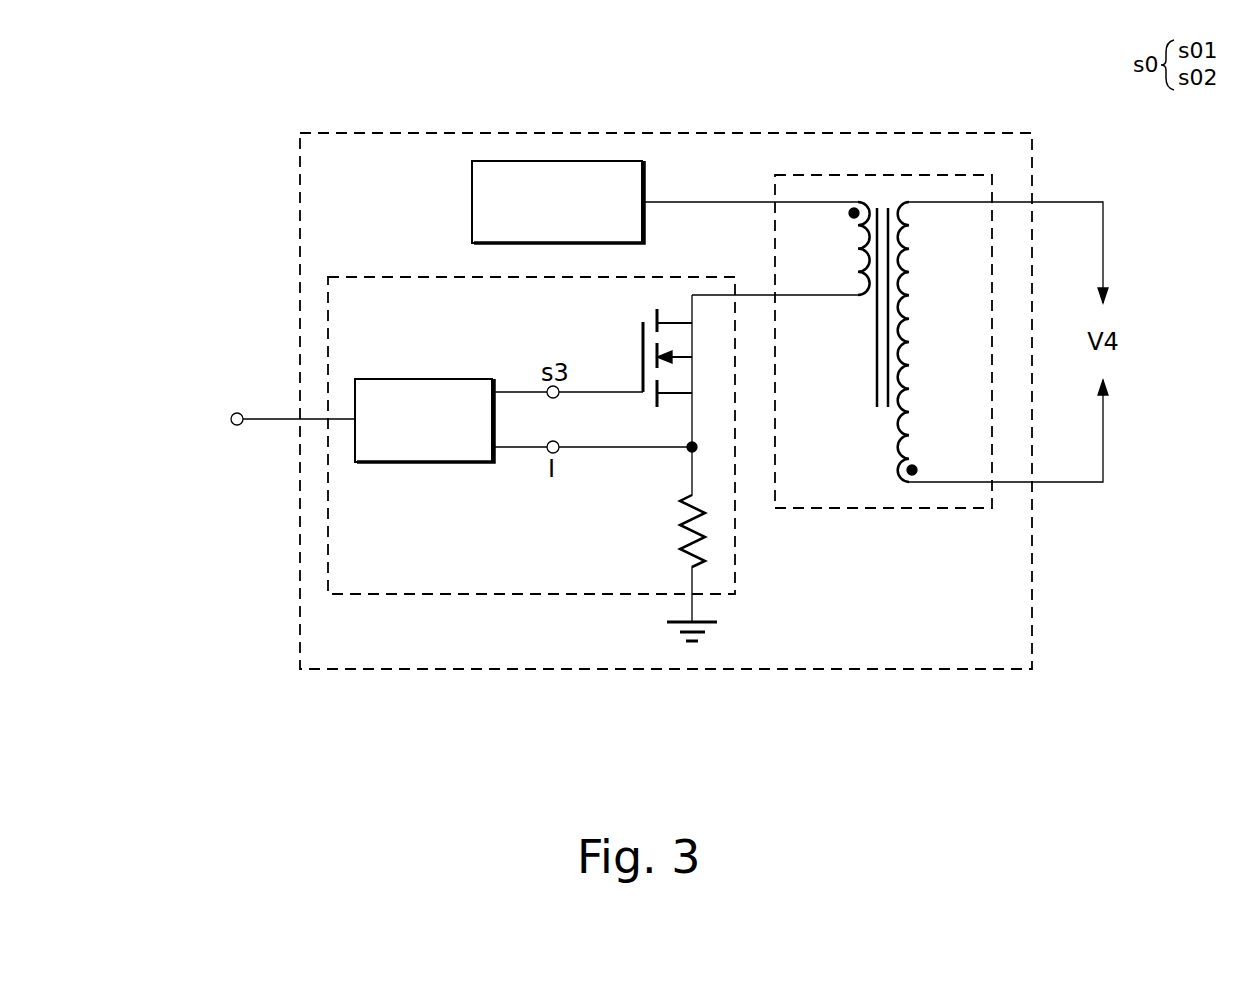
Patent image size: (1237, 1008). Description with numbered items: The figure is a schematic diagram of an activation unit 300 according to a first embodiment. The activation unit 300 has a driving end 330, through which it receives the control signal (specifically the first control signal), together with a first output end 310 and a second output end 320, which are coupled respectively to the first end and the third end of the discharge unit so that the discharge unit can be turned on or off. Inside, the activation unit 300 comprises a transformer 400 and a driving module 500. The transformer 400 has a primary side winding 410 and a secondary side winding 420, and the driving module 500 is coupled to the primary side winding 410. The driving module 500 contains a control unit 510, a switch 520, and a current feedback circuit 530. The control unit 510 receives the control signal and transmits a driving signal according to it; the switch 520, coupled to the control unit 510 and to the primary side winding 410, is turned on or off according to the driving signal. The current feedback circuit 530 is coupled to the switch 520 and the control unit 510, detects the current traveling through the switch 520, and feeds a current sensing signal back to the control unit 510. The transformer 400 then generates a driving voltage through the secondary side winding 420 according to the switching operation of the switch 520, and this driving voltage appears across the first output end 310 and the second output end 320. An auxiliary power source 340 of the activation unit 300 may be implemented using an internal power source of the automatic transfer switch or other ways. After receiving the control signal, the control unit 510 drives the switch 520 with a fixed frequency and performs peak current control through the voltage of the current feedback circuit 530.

The activation unit 300 is at (341, 133).
The first output end 310 is at (1083, 202).
The second output end 320 is at (1083, 483).
The driving end 330 is at (238, 412).
The auxiliary power source 340 is at (472, 201).
The transformer 400 is at (881, 508).
The primary side winding 410 is at (858, 260).
The secondary side winding 420 is at (907, 260).
The driving module 500 is at (397, 277).
The control unit 510 is at (424, 379).
The switch 520 is at (640, 328).
The current feedback circuit 530 is at (680, 535).